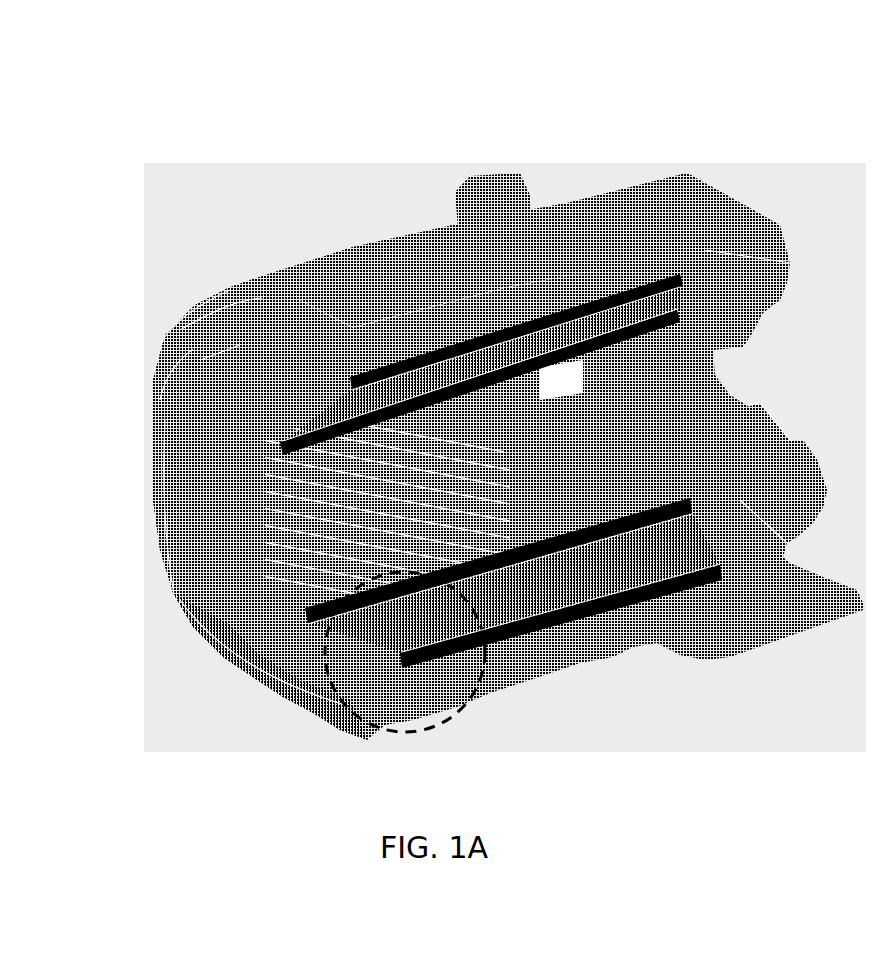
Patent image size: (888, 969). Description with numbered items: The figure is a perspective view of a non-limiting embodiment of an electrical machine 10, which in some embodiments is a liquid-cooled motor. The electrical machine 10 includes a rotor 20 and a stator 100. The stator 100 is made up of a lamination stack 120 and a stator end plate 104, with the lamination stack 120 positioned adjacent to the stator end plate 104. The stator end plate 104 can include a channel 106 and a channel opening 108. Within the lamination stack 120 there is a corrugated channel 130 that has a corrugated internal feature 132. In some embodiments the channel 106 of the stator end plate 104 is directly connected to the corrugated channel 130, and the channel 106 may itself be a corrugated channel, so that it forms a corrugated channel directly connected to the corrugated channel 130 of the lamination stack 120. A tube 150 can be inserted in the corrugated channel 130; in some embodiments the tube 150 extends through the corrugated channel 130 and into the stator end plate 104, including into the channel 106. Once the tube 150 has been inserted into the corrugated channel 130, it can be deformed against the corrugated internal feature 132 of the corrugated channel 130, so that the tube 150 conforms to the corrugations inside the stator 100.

The electrical machine 10 is at (165, 112).
The stator 100 is at (318, 165).
The lamination stack 120 is at (355, 248).
The stator end plate 104 is at (228, 335).
The channel opening 108 is at (220, 340).
The rotor 20 is at (148, 510).
The channel 106 is at (303, 690).
The corrugated channel 130 is at (423, 640).
The corrugated internal feature 132 is at (570, 290).
The tube 150 is at (755, 338).